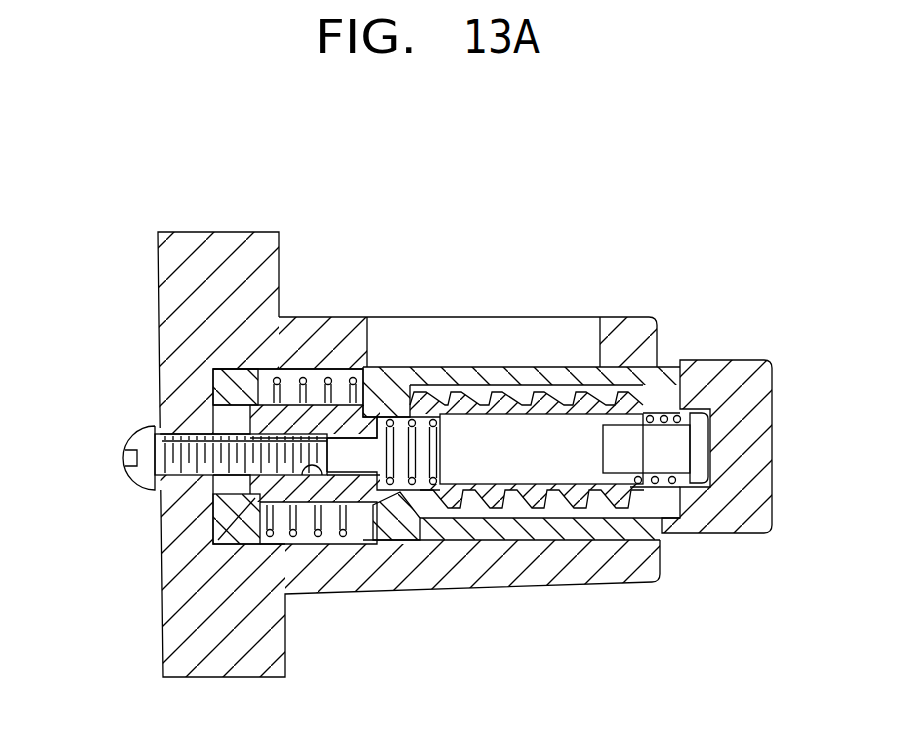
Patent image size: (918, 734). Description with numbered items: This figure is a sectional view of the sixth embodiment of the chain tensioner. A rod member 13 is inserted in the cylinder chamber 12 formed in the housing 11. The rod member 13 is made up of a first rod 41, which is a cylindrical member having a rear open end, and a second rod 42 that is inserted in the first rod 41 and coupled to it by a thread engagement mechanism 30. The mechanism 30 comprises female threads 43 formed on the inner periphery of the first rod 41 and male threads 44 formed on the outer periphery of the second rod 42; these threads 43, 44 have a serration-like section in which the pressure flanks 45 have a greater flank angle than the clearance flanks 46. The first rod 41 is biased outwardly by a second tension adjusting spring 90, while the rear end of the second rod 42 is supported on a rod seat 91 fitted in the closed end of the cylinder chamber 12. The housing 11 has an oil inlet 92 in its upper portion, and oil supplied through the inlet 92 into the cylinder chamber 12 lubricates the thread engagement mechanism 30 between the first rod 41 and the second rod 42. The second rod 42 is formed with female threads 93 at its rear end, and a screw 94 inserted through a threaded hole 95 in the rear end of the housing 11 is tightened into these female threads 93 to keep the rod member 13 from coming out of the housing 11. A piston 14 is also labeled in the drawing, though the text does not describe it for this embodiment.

The housing 11 is at (165, 273).
The cylinder chamber 12 is at (288, 378).
The rod member 13 is at (680, 360).
The piston 14 is at (472, 388).
The thread engagement mechanism 30 is at (399, 506).
The first rod 41 is at (728, 390).
The second rod 42 is at (388, 410).
The female threads 43 is at (415, 398).
The male threads 44 is at (442, 392).
The pressure flanks 45 is at (378, 508).
The clearance flanks 46 is at (442, 510).
The second tension adjusting spring 90 is at (328, 378).
The rod seat 91 is at (215, 542).
The oil inlet 92 is at (549, 345).
The female threads 93 is at (332, 540).
The screw 94 is at (163, 515).
The threaded hole 95 is at (142, 432).